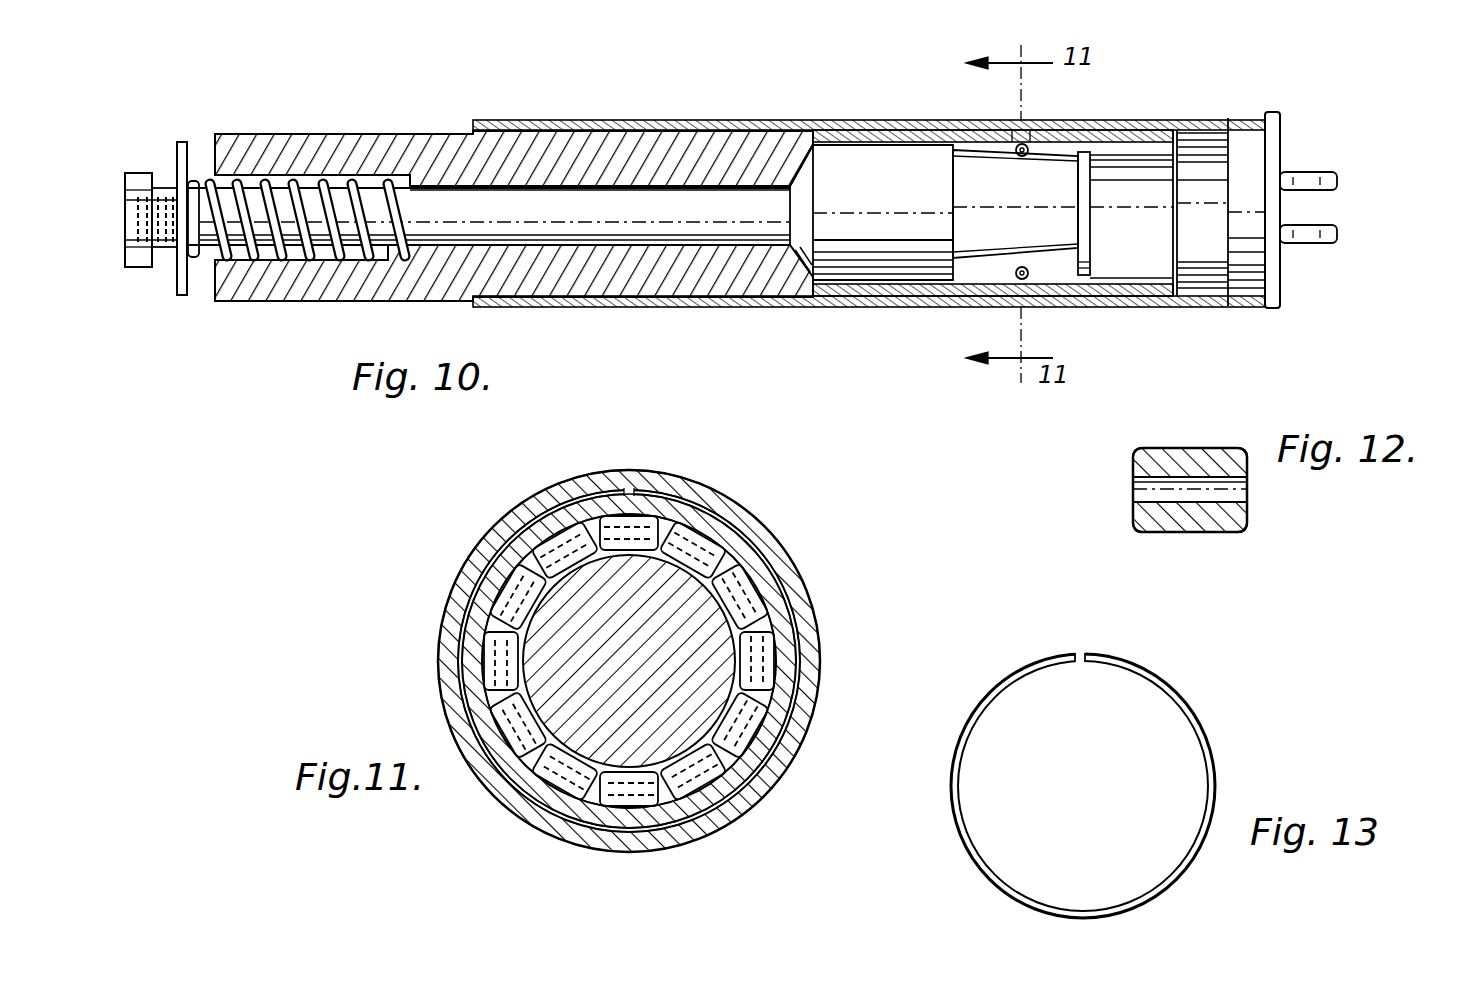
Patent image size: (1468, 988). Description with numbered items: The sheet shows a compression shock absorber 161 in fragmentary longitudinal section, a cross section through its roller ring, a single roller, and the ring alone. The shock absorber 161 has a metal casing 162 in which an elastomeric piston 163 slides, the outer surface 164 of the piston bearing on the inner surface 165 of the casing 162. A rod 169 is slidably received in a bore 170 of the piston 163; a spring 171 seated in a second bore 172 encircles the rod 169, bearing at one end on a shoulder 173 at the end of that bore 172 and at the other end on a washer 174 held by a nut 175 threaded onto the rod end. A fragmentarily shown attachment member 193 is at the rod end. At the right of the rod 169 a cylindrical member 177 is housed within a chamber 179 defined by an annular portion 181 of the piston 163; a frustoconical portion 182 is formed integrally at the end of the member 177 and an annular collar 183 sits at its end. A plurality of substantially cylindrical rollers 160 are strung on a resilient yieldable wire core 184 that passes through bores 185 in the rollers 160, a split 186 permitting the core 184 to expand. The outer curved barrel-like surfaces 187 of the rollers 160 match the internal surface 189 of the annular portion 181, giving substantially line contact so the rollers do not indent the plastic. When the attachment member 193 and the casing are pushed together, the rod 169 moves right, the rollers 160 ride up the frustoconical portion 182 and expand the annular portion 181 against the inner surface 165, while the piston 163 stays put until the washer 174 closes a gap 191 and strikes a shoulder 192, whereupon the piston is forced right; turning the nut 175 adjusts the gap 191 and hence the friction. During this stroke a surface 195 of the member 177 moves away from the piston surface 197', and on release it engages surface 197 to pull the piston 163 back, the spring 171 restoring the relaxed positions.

In FIG. 10, the rollers 160 is at (1022, 157).
In FIG. 11, the rollers 160 is at (515, 540).
In FIG. 12, the rollers 160 is at (1205, 520).
In FIG. 10, the shock absorber 161 is at (650, 103).
In FIG. 11, the shock absorber 161 is at (786, 504).
In FIG. 10, the casing 162 is at (732, 307).
In FIG. 10, the elastomeric piston 163 is at (515, 150).
In FIG. 10, the outer surface 164 is at (415, 134).
In FIG. 11, the outer surface 164 is at (820, 652).
In FIG. 10, the inner surface 165 is at (725, 121).
In FIG. 11, the inner surface 165 is at (802, 620).
In FIG. 10, the rod 169 is at (545, 210).
In FIG. 10, the bore 170 is at (505, 195).
In FIG. 10, the spring 171 is at (305, 255).
In FIG. 10, the bore 172 is at (265, 282).
In FIG. 10, the shoulder 173 is at (385, 258).
In FIG. 10, the washer 174 is at (186, 142).
In FIG. 10, the nut 175 is at (158, 270).
In FIG. 10, the cylindrical member 177 is at (848, 265).
In FIG. 10, the chamber 179 is at (1135, 258).
In FIG. 10, the annular portion 181 is at (1142, 97).
In FIG. 11, the annular portion 181 is at (782, 715).
In FIG. 10, the frustoconical portion 182 is at (978, 185).
In FIG. 11, the frustoconical portion 182 is at (560, 680).
In FIG. 10, the annular collar 183 is at (1092, 226).
In FIG. 10, the wire core 184 is at (1013, 121).
In FIG. 11, the wire core 184 is at (580, 470).
In FIG. 13, the wire core 184 is at (1195, 716).
In FIG. 12, the bores 185 is at (1140, 498).
In FIG. 11, the split 186 is at (636, 487).
In FIG. 13, the split 186 is at (1080, 653).
In FIG. 12, the outer curved barrel-like surfaces 187 is at (1150, 450).
In FIG. 10, the internal surface 189 is at (1180, 275).
In FIG. 11, the internal surface 189 is at (762, 580).
In FIG. 10, the gap 191 is at (200, 295).
In FIG. 10, the shoulder 192 is at (205, 140).
In FIG. 10, the attachment member 193 is at (135, 172).
In FIG. 10, the surface 195 is at (805, 170).
In FIG. 10, the piston surface 197 is at (883, 109).
In FIG. 10, the surface 197' is at (875, 212).